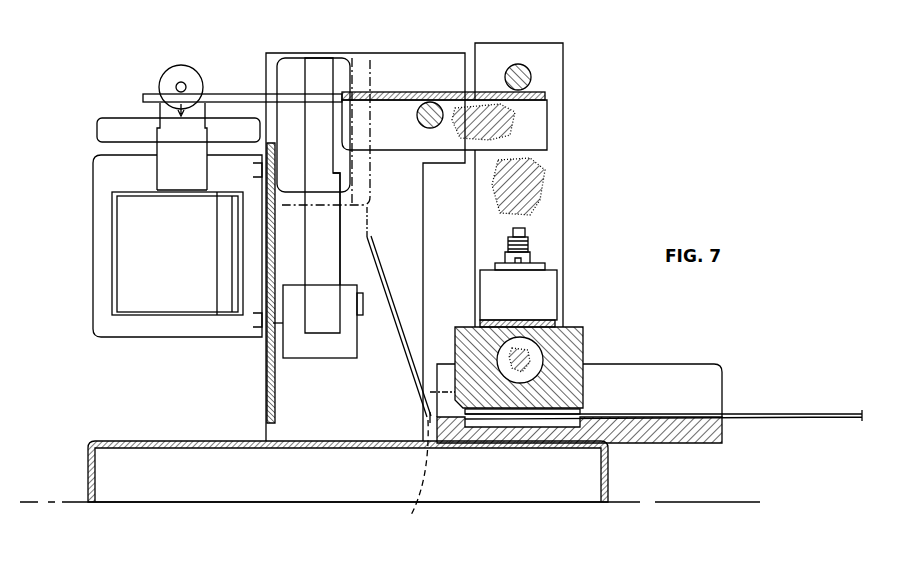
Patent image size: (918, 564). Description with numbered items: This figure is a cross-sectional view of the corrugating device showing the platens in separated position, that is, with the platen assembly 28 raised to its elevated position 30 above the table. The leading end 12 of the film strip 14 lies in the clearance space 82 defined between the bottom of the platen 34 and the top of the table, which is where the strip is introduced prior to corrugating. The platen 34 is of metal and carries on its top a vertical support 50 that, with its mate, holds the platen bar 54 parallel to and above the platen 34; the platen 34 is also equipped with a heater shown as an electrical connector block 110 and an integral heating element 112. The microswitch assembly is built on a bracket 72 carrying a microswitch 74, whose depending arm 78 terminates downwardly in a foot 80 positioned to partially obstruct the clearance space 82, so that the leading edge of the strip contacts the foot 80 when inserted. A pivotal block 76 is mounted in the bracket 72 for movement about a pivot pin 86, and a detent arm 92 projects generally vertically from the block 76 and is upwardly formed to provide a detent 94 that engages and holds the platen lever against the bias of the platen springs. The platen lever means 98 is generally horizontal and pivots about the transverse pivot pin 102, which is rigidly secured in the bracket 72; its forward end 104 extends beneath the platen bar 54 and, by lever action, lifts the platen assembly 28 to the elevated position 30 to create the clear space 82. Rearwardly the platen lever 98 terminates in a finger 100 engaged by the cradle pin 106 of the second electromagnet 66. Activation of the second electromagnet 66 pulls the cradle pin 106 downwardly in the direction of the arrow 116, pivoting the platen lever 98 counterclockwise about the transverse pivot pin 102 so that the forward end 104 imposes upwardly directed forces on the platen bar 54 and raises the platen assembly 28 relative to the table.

The leading end 12 is at (520, 416).
The film strip 14 is at (743, 414).
The platen assembly 28 is at (568, 256).
The elevated position 30 is at (593, 403).
The platen 34 is at (577, 342).
The vertical support 50 is at (550, 210).
The platen bar 54 is at (531, 74).
The second electromagnet 66 is at (100, 280).
The bracket 72 is at (403, 67).
The microswitch 74 is at (363, 72).
The pivotal block 76 is at (325, 350).
The depending arm 78 is at (410, 368).
The foot 80 is at (408, 512).
The clearance space 82 is at (502, 411).
The pivot pin 86 is at (362, 307).
The detent arm 92 is at (303, 227).
The detent 94 is at (308, 83).
The platen lever means 98 is at (249, 94).
The finger 100 is at (160, 94).
The transverse pivot pin 102 is at (420, 100).
The forward end 104 is at (540, 117).
The cradle pin 106 is at (184, 84).
The electrical connector block 110 is at (543, 293).
The heating element 112 is at (530, 352).
The arrow 116 is at (200, 106).